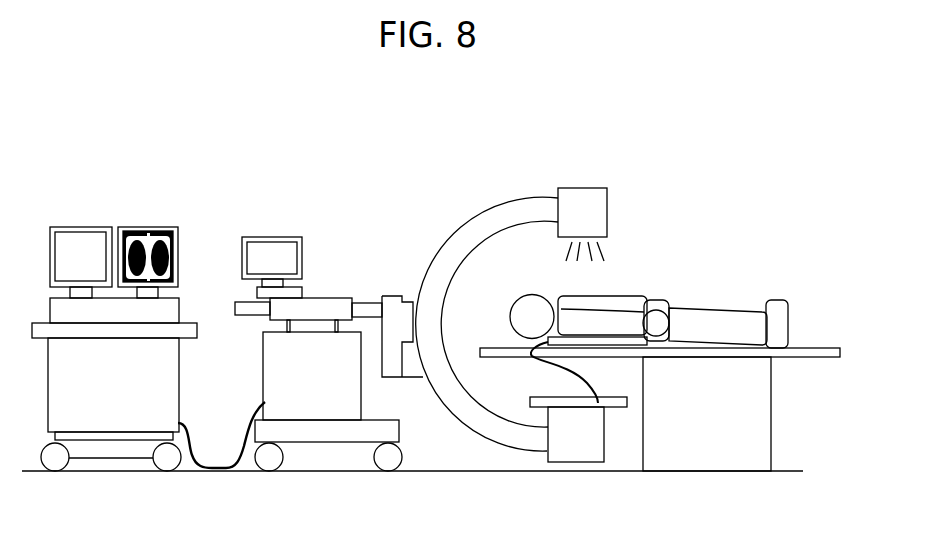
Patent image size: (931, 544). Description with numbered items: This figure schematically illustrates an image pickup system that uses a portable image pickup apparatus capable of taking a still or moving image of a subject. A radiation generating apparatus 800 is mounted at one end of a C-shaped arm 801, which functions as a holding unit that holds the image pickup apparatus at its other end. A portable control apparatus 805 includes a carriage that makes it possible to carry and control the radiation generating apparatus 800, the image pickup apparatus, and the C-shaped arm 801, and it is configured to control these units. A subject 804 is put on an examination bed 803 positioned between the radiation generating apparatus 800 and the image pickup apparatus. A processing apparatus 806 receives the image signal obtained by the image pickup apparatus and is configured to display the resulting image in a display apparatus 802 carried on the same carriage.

The radiation generating apparatus 800 is at (610, 203).
The C-shaped arm 801 is at (448, 242).
The display apparatus 802 is at (163, 227).
The examination bed 803 is at (757, 360).
The subject 804 is at (728, 308).
The portable control apparatus 805 is at (328, 432).
The processing apparatus 806 is at (110, 423).